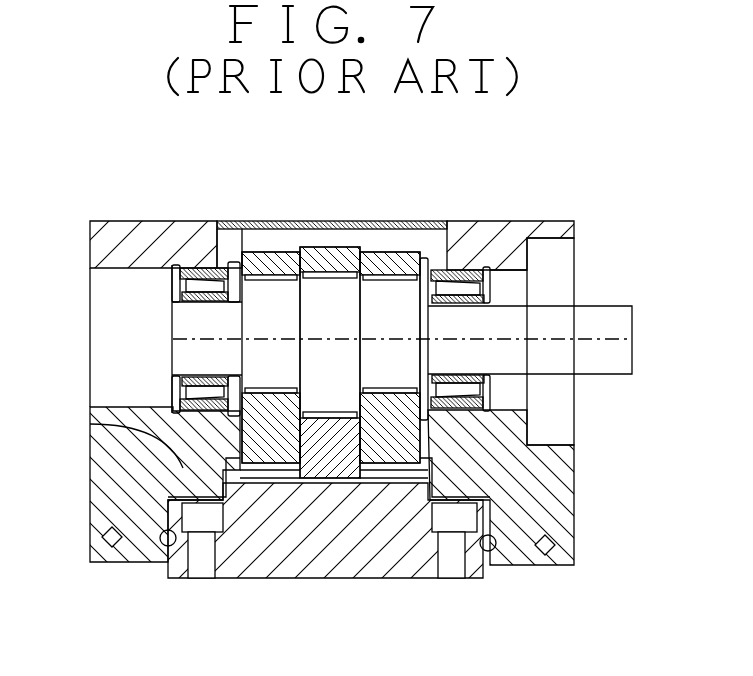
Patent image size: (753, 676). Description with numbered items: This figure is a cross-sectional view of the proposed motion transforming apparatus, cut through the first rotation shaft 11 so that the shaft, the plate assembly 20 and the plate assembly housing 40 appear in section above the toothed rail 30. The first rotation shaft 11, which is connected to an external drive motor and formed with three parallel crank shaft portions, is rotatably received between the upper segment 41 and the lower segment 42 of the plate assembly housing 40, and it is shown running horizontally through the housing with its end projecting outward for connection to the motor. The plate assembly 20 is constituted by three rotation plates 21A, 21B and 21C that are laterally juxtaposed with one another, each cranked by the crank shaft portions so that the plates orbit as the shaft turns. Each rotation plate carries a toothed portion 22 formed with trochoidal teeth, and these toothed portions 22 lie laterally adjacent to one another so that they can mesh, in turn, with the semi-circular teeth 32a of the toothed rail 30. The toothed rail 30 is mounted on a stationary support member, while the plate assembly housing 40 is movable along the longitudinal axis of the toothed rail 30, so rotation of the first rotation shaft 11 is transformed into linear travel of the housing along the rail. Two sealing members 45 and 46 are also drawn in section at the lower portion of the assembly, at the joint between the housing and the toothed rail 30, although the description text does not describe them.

The first rotation shaft 11 is at (603, 310).
The plate assembly 20 is at (418, 221).
The rotation plate 21A is at (401, 245).
The rotation plate 21B is at (335, 246).
The rotation plate 21C is at (272, 250).
The toothed portion 22 is at (415, 442).
The toothed rail 30 is at (282, 576).
The semi-circular teeth 32a is at (93, 424).
The plate assembly housing 40 is at (552, 219).
The upper segment 41 is at (105, 240).
The lower segment 42 is at (95, 525).
The O-ring seal 45 is at (180, 578).
The O-ring seal 46 is at (478, 562).